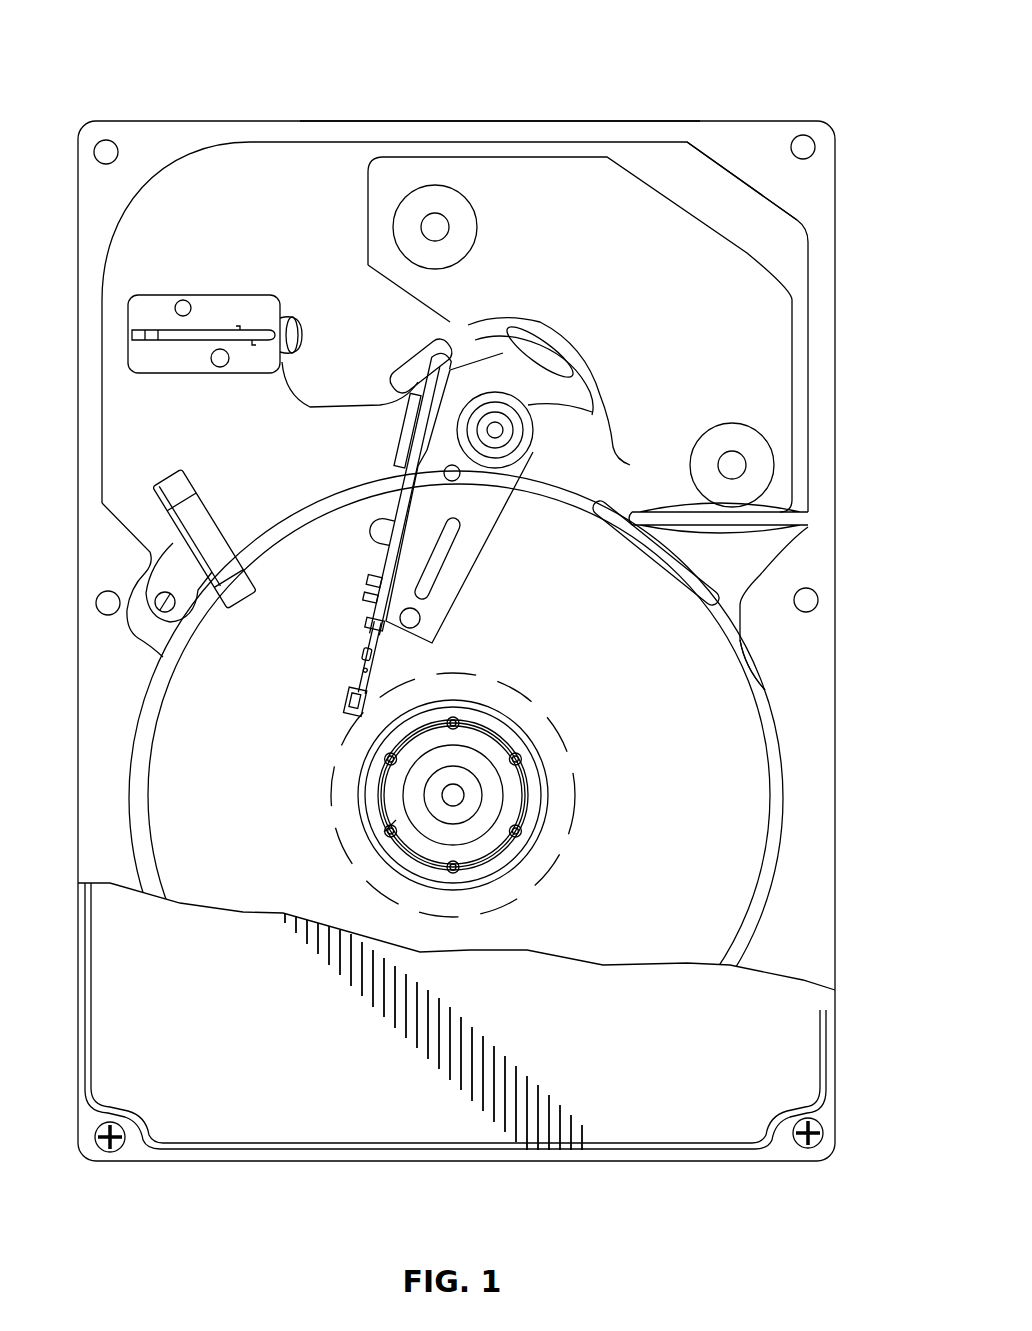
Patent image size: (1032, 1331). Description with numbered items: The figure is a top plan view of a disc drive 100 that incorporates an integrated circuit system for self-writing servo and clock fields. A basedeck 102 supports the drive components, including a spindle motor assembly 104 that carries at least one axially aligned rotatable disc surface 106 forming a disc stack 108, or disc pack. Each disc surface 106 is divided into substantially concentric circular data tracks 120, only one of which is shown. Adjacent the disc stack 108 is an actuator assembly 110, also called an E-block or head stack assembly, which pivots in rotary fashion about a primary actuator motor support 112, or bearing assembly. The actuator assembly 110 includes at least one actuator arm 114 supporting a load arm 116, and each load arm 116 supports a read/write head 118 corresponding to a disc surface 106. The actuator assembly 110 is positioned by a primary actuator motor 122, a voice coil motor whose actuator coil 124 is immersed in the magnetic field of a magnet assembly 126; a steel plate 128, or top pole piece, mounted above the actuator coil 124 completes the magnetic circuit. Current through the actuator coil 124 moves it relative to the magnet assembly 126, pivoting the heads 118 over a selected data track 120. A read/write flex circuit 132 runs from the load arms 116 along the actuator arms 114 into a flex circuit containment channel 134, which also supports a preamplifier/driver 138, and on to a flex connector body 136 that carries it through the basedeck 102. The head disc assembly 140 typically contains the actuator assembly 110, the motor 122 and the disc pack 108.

The disc drive 100 is at (405, 72).
The basedeck 102 is at (264, 170).
The spindle motor assembly 104 is at (480, 780).
The disc surface 106 is at (707, 668).
The disc stack 108 is at (776, 737).
The actuator assembly 110 is at (518, 514).
The primary actuator motor support 112 is at (552, 444).
The actuator arm 114 is at (417, 602).
The load arm 116 is at (378, 672).
The read/write head 118 is at (357, 723).
The data track 120 is at (540, 880).
The primary actuator motor 122 is at (760, 246).
The actuator coil 124 is at (492, 333).
The magnet assembly 126 is at (501, 190).
The steel plate 128 is at (765, 360).
The read/write flex circuit 132 is at (283, 397).
The flex circuit containment channel 134 is at (403, 530).
The flex connector body 136 is at (147, 360).
The preamplifier/driver 138 is at (403, 422).
The head disc assembly 140 is at (595, 108).